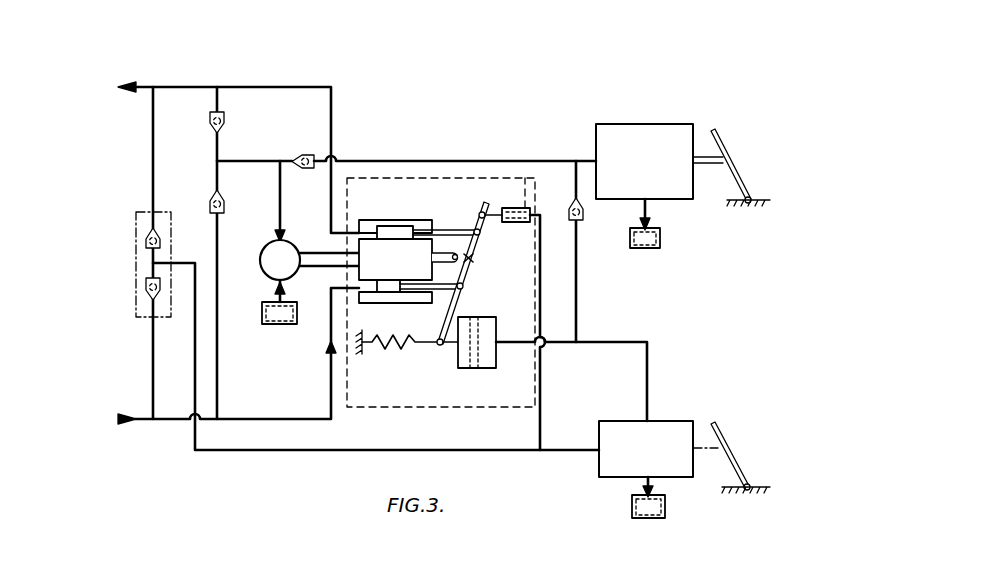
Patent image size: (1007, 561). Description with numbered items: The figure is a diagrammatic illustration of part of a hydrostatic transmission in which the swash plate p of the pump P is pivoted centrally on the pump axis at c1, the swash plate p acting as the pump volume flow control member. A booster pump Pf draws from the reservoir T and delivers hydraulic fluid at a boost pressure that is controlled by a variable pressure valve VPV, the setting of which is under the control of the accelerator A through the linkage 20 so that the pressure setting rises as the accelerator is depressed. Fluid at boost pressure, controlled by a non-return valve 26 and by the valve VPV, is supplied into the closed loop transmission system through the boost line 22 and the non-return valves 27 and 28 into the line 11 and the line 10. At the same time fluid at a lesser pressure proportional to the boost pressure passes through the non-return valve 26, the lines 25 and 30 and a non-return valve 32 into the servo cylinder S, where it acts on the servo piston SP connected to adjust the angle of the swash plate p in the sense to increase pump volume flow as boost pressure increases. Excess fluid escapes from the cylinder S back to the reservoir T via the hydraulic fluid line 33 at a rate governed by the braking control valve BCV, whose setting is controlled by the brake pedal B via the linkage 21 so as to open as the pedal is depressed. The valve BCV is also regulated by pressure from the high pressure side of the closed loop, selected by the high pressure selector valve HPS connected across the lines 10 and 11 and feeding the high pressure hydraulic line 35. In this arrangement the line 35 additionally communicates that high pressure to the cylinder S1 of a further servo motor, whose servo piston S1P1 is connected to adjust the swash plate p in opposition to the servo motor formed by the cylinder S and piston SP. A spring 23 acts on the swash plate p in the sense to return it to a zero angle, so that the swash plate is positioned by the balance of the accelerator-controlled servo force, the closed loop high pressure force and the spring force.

The line 10 is at (331, 386).
The line 11 is at (283, 87).
The boost line 22 is at (262, 161).
The spring 23 is at (410, 342).
The line 25 is at (428, 161).
The non-return valve 26 is at (306, 155).
The non-return valve 27 is at (210, 120).
The non-return valve 28 is at (210, 196).
The line 30 is at (567, 183).
The non-return valve 32 is at (583, 212).
The hydraulic fluid line 33 is at (620, 342).
The high pressure hydraulic line 35 is at (268, 450).
The linkage 20 is at (717, 157).
The linkage 21 is at (730, 460).
The high pressure selector valve HPS is at (136, 228).
The booster pump Pf is at (266, 247).
The reservoir T is at (297, 315).
The pump P is at (390, 220).
The swash plate p is at (470, 268).
The pivot c1 is at (480, 262).
The servo cylinder S is at (497, 317).
The servo piston SP is at (466, 372).
The cylinder S1 is at (507, 208).
The servo piston S1P1 is at (524, 208).
The variable pressure valve VPV is at (630, 124).
The accelerator A is at (740, 172).
The braking control valve BCV is at (670, 421).
The brake pedal B is at (722, 444).